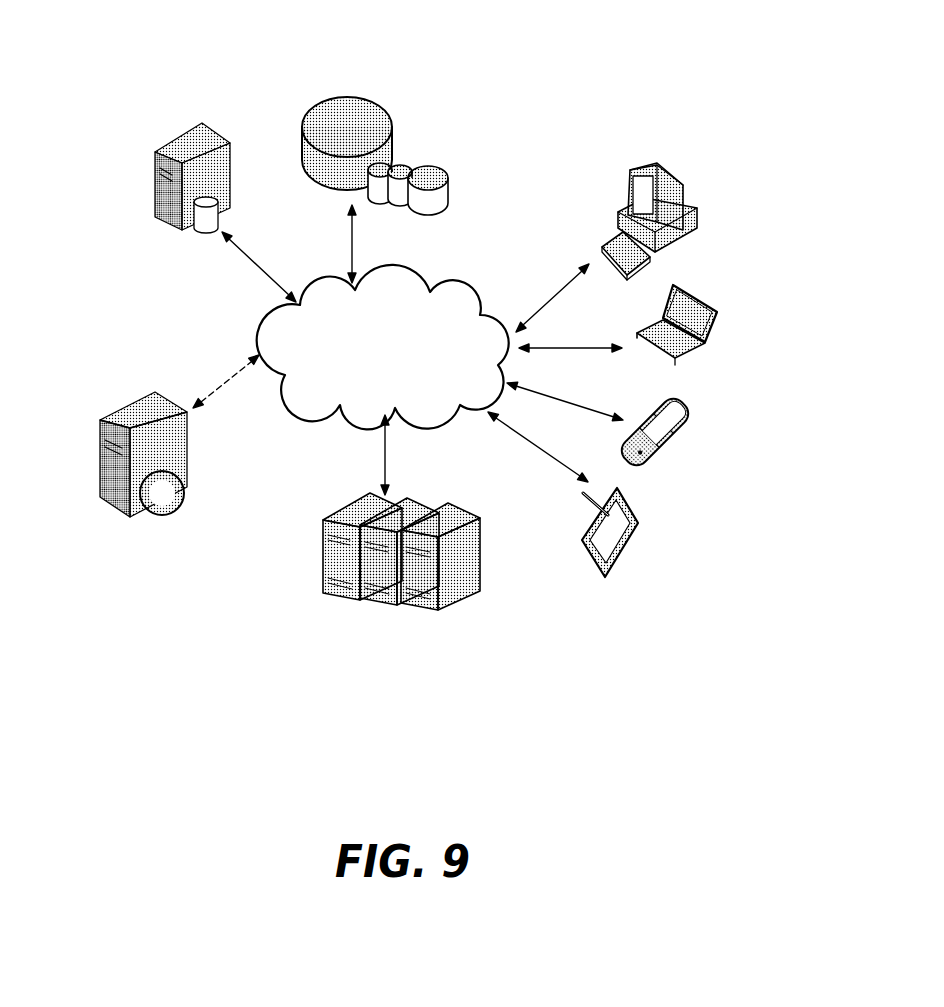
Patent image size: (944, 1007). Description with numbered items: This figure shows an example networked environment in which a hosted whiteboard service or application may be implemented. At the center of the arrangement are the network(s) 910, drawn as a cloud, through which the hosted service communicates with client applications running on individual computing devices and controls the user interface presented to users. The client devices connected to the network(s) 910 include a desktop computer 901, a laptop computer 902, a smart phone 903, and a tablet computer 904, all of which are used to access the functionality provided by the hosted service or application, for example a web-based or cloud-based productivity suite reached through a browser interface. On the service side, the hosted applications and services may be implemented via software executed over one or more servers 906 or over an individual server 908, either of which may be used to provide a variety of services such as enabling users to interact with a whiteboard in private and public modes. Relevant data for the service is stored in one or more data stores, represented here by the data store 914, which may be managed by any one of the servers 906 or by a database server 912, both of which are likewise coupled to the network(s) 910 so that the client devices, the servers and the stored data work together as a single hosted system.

The desktop computer 901 is at (684, 154).
The laptop computer 902 is at (719, 282).
The smart phone 903 is at (689, 399).
The tablet computer 904 is at (654, 502).
The servers 906 is at (349, 497).
The individual server 908 is at (121, 400).
The network(s) 910 is at (392, 267).
The database server 912 is at (193, 242).
The data store 914 is at (364, 74).